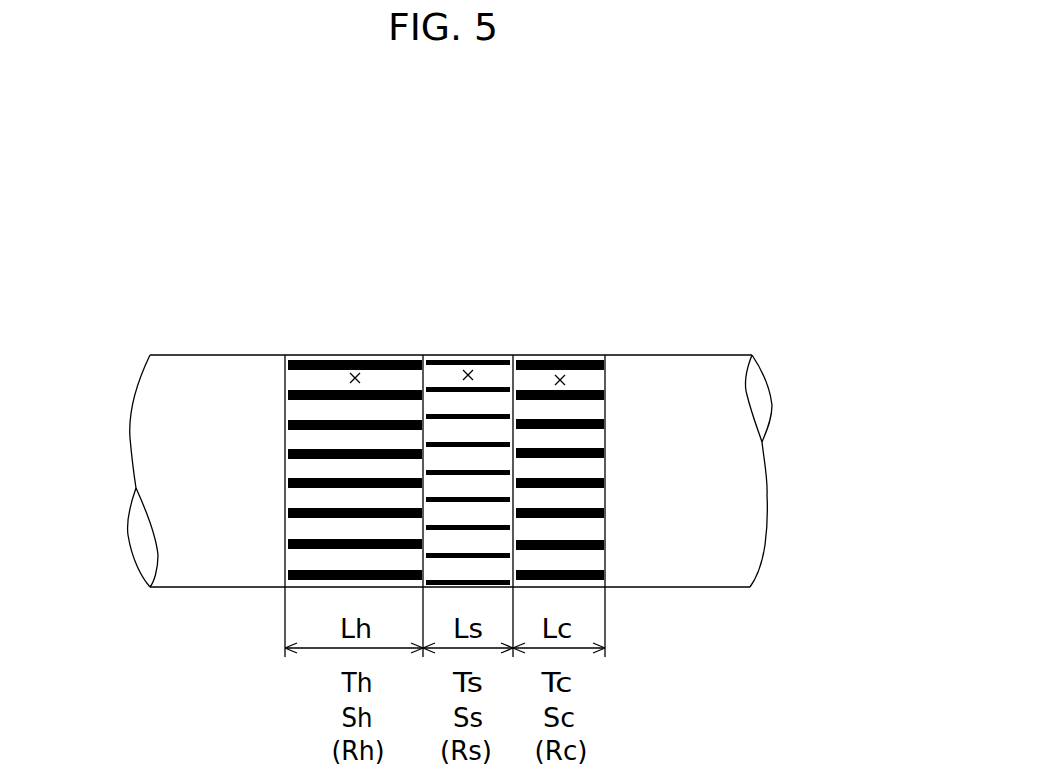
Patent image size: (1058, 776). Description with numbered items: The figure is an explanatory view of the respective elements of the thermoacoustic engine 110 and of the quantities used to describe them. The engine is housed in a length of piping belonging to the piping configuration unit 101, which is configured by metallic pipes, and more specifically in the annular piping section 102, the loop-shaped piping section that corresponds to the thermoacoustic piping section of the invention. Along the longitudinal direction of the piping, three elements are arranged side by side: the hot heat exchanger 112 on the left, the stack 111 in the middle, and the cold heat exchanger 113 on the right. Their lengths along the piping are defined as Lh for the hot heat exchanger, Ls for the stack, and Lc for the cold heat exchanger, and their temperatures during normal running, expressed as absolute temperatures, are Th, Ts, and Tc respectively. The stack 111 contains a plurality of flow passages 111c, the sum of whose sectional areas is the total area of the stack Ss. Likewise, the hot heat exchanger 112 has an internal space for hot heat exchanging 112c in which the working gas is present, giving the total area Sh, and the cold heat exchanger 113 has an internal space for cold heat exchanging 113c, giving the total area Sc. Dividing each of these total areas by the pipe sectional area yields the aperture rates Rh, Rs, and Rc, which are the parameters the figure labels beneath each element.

The piping configuration unit 101 is at (499, 435).
The annular piping section 102 is at (726, 372).
The thermoacoustic engine 110 is at (445, 384).
The stack 111 is at (466, 375).
The hot heat exchanger 112 is at (355, 373).
The cold heat exchanger 113 is at (560, 373).
The plurality of flow passages 111c is at (463, 357).
The internal space for hot heat exchanging 112c is at (356, 357).
The internal space for cold heat exchanging 113c is at (557, 357).